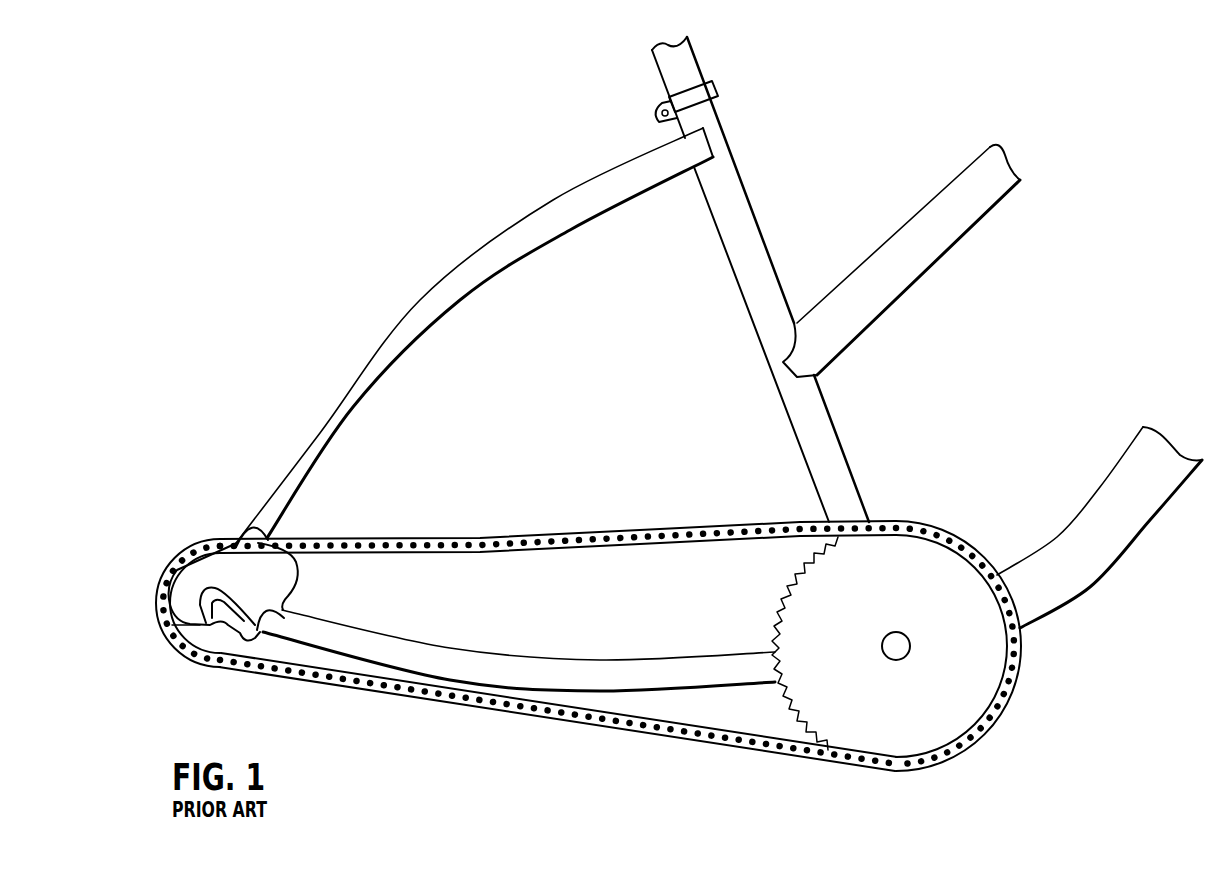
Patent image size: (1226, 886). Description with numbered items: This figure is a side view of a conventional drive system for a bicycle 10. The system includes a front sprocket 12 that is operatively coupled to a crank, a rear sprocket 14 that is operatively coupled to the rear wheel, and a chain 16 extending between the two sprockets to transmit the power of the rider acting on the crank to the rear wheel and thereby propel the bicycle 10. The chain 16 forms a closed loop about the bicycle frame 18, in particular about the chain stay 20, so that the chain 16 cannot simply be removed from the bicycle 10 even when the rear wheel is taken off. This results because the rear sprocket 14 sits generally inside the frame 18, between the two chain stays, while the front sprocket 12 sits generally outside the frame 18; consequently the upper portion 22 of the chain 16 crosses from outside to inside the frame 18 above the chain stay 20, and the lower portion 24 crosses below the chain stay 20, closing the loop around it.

The bicycle 10 is at (330, 233).
The front sprocket 12 is at (975, 660).
The rear sprocket 14 is at (211, 650).
The chain 16 is at (588, 627).
The bicycle frame 18 is at (753, 221).
The chain stay 20 is at (706, 655).
The upper portion of the chain 22 is at (500, 536).
The lower portion of the chain 24 is at (533, 714).